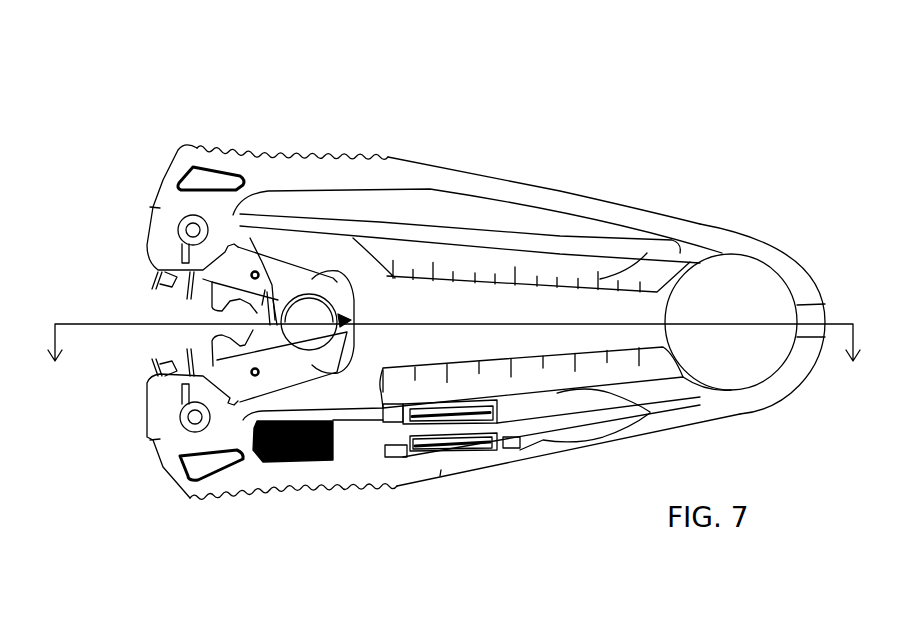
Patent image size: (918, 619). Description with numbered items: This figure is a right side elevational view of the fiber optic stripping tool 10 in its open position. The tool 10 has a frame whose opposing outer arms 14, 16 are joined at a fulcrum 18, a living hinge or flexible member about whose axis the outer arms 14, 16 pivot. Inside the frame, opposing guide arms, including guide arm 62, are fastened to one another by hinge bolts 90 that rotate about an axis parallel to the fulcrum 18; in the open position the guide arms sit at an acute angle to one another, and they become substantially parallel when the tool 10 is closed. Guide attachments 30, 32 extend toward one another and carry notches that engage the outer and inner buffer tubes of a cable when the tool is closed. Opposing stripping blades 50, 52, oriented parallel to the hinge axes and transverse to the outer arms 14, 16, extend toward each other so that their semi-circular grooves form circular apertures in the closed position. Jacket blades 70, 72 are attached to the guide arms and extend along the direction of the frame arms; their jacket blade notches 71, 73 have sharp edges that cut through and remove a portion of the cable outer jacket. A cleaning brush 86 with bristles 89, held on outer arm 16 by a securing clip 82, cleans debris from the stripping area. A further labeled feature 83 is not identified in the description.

The stripping tool 10 is at (702, 121).
The outer arm 14 is at (458, 361).
The outer arm 16 is at (477, 172).
The fulcrum 18 is at (825, 318).
The guide attachment 30 is at (173, 356).
The guide attachment 32 is at (181, 288).
The stripping blade 50 is at (170, 395).
The stripping blade 52 is at (170, 271).
The guide arm 62 is at (345, 283).
The jacket blade 70 is at (218, 322).
The jacket blade notch 71 is at (340, 370).
The jacket blade 72 is at (250, 238).
The jacket blade notch 73 is at (265, 290).
The securing clip 82 is at (462, 437).
The lock 83 is at (647, 253).
The cleaning brush 86 is at (617, 417).
The bristles 89 is at (297, 462).
The hinge bolt 90 is at (318, 310).